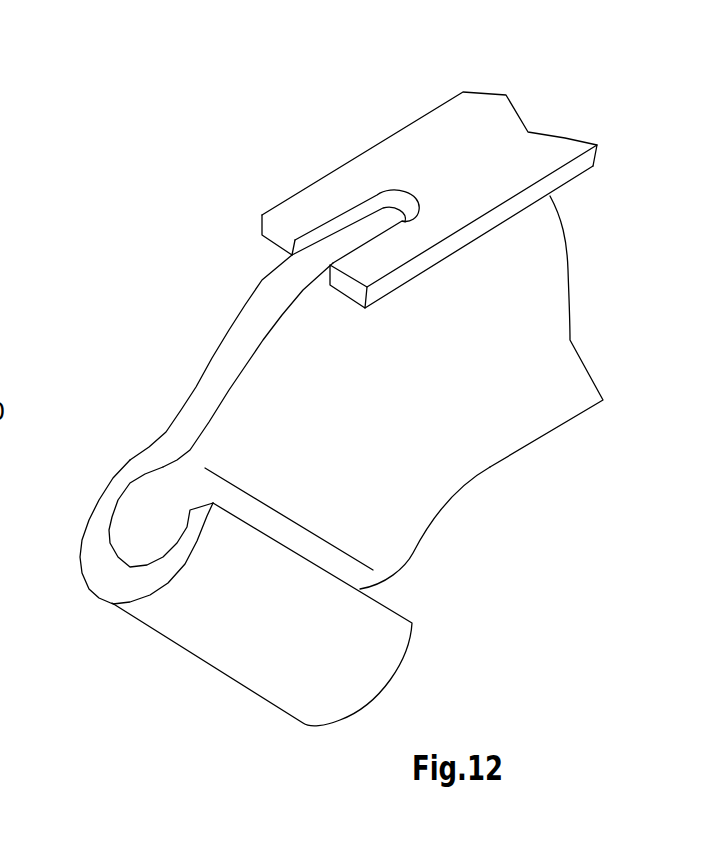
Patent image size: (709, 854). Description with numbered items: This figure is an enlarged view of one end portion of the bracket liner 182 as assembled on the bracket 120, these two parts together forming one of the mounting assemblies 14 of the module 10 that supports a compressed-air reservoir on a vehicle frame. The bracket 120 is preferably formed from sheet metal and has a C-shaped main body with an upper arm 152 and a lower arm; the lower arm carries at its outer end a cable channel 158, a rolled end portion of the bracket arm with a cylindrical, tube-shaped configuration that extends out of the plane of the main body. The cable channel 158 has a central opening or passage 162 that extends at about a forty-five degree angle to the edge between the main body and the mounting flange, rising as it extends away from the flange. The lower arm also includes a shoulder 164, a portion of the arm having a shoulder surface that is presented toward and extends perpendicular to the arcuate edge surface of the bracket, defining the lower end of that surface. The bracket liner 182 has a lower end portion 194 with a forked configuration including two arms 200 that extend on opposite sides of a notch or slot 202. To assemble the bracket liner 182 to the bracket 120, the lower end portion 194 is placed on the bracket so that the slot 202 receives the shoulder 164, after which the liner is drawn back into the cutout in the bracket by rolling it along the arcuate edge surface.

The module 10 is at (492, 585).
The mounting assembly 14 is at (523, 522).
The bracket 120 is at (580, 358).
The upper arm 152 is at (500, 420).
The cable channel 158 is at (260, 648).
The passage 162 is at (137, 528).
The shoulder 164 is at (357, 235).
The bracket liner 182 is at (570, 138).
The lower end portion 194 is at (452, 185).
The arms 200 is at (338, 194).
The slot 202 is at (382, 193).